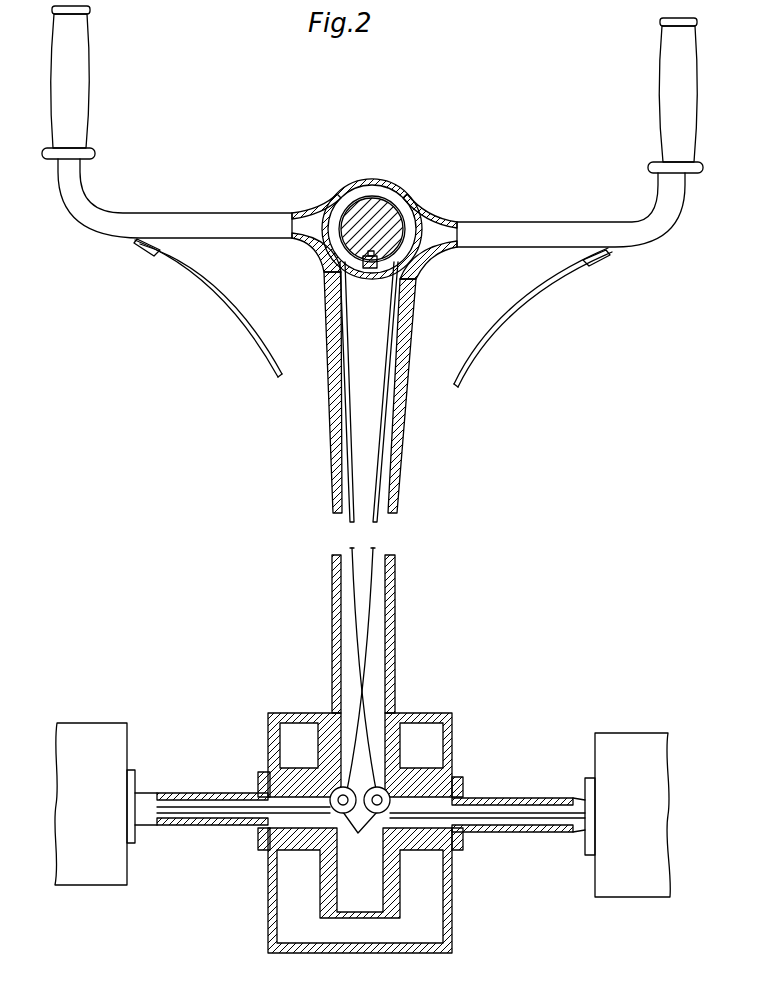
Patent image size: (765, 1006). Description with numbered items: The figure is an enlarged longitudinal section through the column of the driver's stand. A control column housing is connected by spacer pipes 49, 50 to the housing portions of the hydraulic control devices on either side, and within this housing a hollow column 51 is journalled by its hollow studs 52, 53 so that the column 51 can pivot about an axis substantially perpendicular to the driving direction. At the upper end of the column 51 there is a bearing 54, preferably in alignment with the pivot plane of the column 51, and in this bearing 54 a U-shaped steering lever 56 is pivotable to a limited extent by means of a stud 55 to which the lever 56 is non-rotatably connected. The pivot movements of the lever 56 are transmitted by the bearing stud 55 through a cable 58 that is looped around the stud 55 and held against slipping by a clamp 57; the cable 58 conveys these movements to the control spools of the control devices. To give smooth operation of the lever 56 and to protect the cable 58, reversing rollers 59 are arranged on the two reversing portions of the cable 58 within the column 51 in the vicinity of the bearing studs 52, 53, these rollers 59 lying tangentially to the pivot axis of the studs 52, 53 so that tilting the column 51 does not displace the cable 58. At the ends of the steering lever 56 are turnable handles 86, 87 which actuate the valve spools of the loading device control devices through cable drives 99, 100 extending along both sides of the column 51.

The spacer pipe 49 is at (520, 798).
The spacer pipe 50 is at (182, 793).
The hollow column 51 is at (335, 468).
The hollow stud 52 is at (456, 780).
The hollow stud 53 is at (265, 775).
The bearing 54 is at (352, 200).
The stud 55 is at (383, 217).
The U-shaped steering lever 56 is at (203, 220).
The clamp 57 is at (371, 269).
The cable 58 is at (408, 335).
The reversing rollers 59 is at (360, 825).
The turnable handle 86 is at (662, 71).
The turnable handle 87 is at (82, 80).
The cable drive 99 is at (528, 297).
The cable drive 100 is at (215, 292).